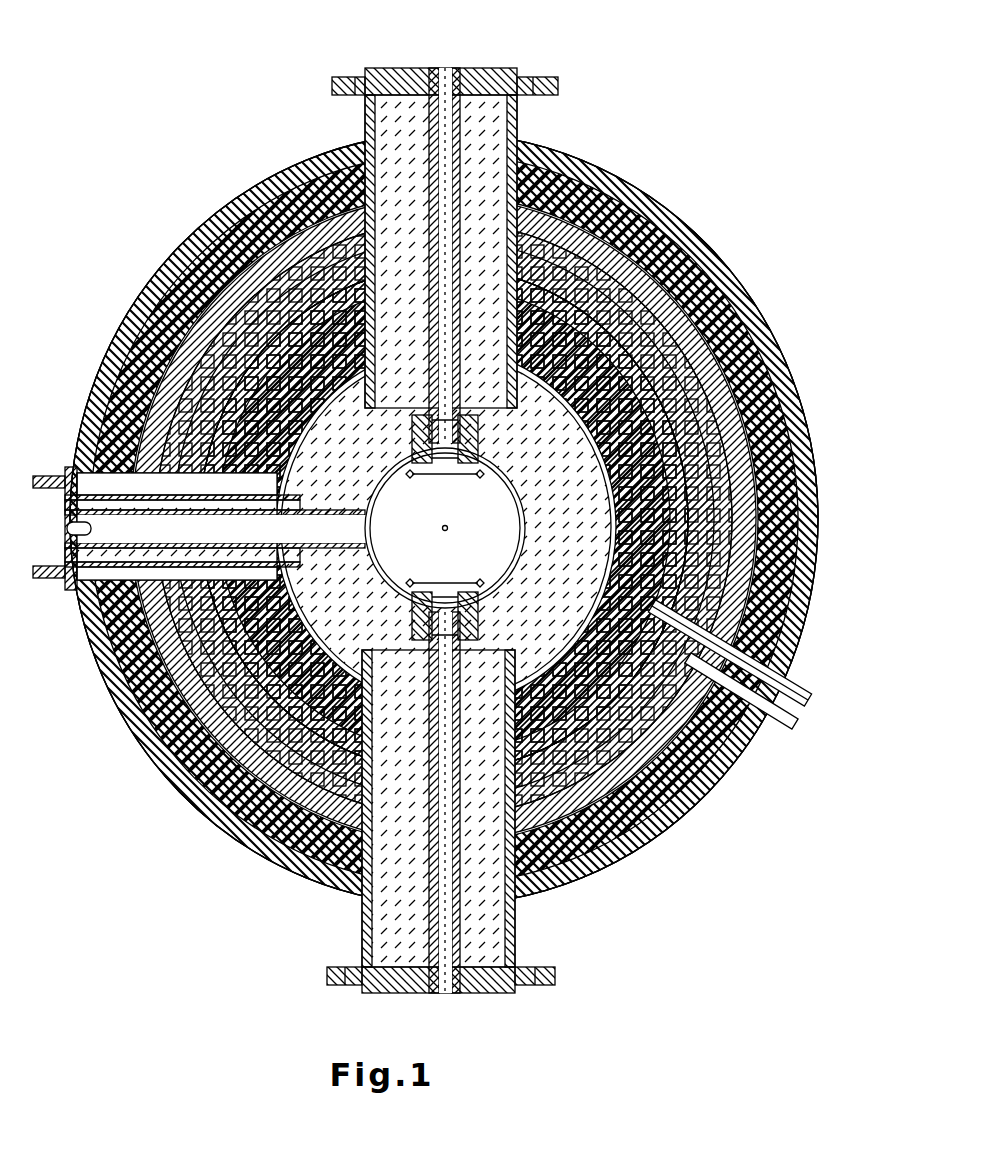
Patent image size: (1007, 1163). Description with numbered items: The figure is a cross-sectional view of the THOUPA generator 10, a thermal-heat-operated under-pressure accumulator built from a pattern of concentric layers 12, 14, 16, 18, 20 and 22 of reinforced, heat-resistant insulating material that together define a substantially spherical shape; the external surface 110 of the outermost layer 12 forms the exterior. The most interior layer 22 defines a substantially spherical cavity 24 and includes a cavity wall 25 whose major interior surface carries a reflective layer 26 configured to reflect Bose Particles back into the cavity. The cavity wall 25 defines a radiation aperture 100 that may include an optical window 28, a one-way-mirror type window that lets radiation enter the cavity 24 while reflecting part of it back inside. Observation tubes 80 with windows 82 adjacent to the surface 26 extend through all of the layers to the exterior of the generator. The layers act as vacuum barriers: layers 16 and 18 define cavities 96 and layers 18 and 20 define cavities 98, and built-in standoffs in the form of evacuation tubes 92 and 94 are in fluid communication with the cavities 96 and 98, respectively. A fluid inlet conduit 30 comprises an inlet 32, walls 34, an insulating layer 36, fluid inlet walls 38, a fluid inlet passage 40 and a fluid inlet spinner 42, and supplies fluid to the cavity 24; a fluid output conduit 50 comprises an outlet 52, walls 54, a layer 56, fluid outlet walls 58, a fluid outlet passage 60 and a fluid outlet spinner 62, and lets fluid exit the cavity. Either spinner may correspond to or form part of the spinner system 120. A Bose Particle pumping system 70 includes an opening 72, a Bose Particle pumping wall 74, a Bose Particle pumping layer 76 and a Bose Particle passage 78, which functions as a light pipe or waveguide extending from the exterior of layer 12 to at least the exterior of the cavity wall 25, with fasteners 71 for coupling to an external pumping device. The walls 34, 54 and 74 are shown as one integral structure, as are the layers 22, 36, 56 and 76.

The THOUPA generator 10 is at (135, 135).
The layer 12 is at (444, 519).
The layer 14 is at (696, 287).
The layer 16 is at (696, 334).
The layer 18 is at (682, 380).
The layer 20 is at (757, 381).
The most interior layer 22 is at (322, 467).
The cavity 24 is at (432, 504).
The cavity wall 25 is at (522, 478).
The reflective layer 26 is at (432, 568).
The optical window 28 is at (362, 533).
The fluid inlet conduit 30 is at (417, 828).
The inlet 32 is at (448, 997).
The walls 34 is at (360, 931).
The layer 36 is at (403, 828).
The fluid inlet walls 38 is at (600, 862).
The fluid inlet passage 40 is at (437, 931).
The fluid inlet spinner 42 is at (444, 519).
The fluid output conduit 50 is at (453, 224).
The outlet 52 is at (440, 63).
The walls 54 is at (362, 130).
The layer 56 is at (405, 212).
The fluid outlet walls 58 is at (462, 195).
The fluid outlet passage 60 is at (455, 247).
The fluid outlet spinner 62 is at (444, 519).
The Bose Particle pumping system 70 is at (185, 547).
The fasteners 71 is at (50, 468).
The opening 72 is at (62, 528).
The Bose Particle pumping wall 74 is at (130, 478).
The Bose Particle pumping layer 76 is at (143, 557).
The Bose Particle passage 78 is at (212, 573).
The observation tubes 80 is at (373, 395).
The windows 82 is at (408, 577).
The evacuation tube 92 is at (782, 737).
The evacuation tube 94 is at (800, 687).
The cavities 96 is at (187, 388).
The cavities 98 is at (273, 330).
The radiation aperture 100 is at (185, 596).
The external surface 110 is at (688, 233).
The spinner system 120 is at (280, 333).